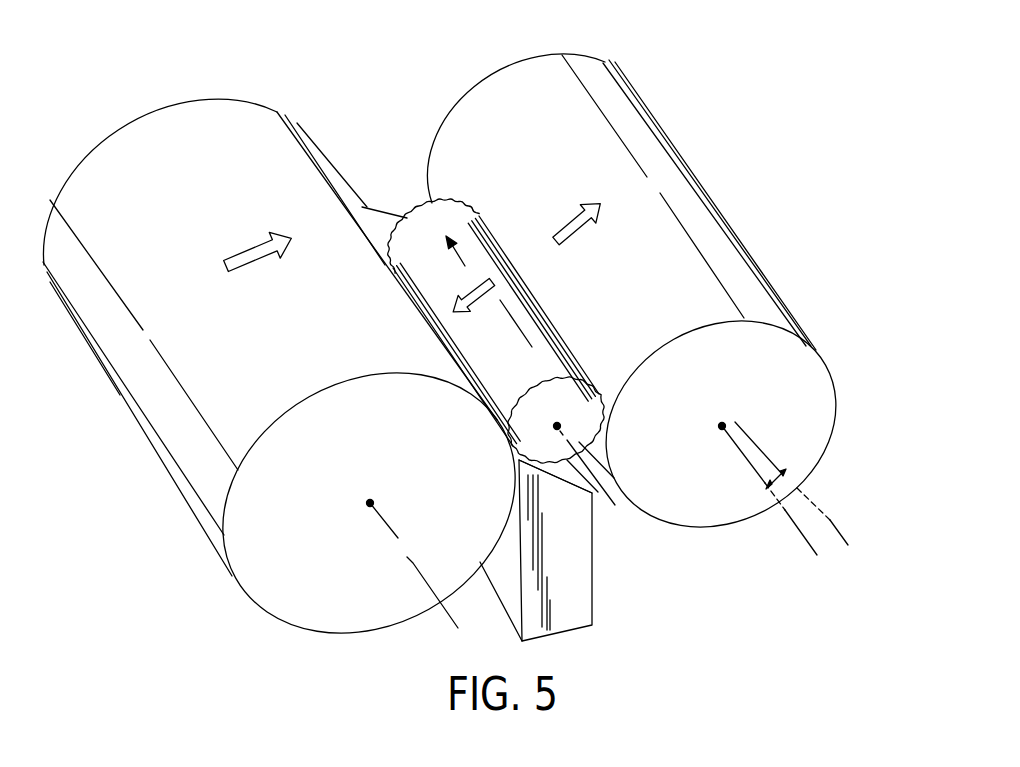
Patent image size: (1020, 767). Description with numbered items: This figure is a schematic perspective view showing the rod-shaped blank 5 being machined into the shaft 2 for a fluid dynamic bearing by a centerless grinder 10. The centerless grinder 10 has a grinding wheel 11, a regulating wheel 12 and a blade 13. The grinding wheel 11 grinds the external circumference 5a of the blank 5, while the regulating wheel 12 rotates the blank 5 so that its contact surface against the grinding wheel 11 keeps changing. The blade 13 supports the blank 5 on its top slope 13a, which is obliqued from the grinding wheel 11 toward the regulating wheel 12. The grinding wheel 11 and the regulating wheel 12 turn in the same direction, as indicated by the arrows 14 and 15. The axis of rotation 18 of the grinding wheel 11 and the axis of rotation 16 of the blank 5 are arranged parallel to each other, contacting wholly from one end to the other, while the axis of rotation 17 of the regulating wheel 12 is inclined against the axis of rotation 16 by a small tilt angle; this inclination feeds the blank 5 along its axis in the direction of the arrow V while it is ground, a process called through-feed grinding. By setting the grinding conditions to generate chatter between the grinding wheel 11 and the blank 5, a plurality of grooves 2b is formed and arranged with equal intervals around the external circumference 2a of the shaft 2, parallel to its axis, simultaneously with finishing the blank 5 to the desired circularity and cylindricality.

The centerless grinder 10 is at (651, 285).
The grinding wheel 11 is at (186, 134).
The regulating wheel 12 is at (575, 70).
The blade 13 is at (558, 550).
The top slope 13a is at (559, 476).
The arrow 14 is at (252, 275).
The arrow 15 is at (577, 222).
The axis of rotation of the blank 16 is at (611, 462).
The axis of rotation of the regulating wheel 17 is at (789, 488).
The axis of rotation of the grinding wheel 18 is at (402, 545).
The rod-shaped blank 5 is at (497, 322).
The shaft 2 is at (497, 322).
The external circumference of the blank 5a is at (506, 275).
The external circumference of the shaft 2a is at (521, 351).
The grooves 2b is at (594, 385).
The arrow V is at (464, 256).